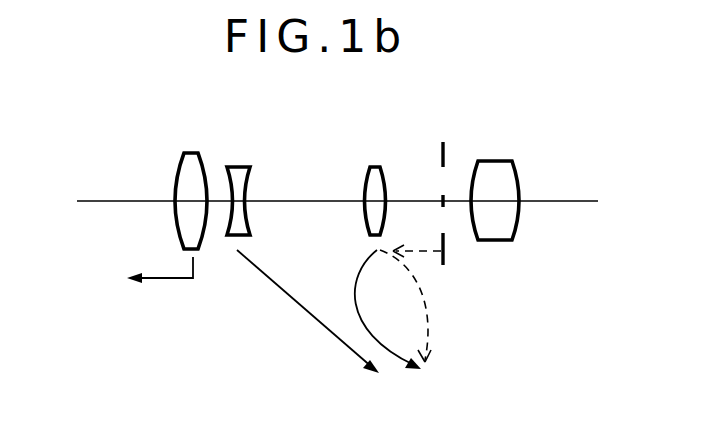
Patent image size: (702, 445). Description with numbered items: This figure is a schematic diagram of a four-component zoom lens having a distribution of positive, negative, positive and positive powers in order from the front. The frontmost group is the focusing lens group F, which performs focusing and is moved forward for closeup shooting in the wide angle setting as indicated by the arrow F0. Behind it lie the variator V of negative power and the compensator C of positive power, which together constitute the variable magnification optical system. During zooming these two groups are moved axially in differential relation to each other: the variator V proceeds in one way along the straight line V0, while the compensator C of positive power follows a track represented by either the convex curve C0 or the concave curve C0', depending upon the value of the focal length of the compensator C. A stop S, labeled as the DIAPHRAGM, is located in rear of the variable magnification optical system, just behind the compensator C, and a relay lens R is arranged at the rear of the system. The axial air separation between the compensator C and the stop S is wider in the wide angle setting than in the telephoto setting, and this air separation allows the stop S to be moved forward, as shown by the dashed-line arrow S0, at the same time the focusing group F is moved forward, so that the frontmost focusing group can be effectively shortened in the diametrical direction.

The focusing lens group F is at (194, 152).
The variator V is at (239, 166).
The compensator C is at (377, 166).
The stop S is at (443, 158).
The diaphragm DIAPHRAGM is at (446, 253).
The relay lens R is at (492, 168).
The arrow Fo F0 is at (163, 281).
The straight line Vo V0 is at (295, 302).
The convex curve Co C0 is at (388, 331).
The concave curve Co' C0' is at (429, 306).
The dashed line So S0 is at (430, 255).